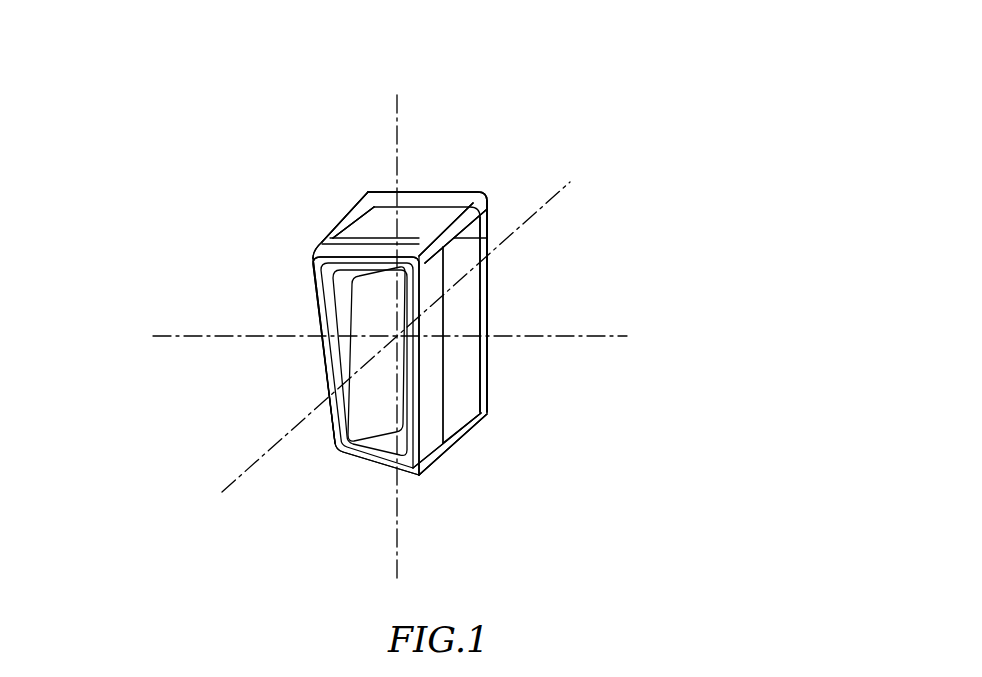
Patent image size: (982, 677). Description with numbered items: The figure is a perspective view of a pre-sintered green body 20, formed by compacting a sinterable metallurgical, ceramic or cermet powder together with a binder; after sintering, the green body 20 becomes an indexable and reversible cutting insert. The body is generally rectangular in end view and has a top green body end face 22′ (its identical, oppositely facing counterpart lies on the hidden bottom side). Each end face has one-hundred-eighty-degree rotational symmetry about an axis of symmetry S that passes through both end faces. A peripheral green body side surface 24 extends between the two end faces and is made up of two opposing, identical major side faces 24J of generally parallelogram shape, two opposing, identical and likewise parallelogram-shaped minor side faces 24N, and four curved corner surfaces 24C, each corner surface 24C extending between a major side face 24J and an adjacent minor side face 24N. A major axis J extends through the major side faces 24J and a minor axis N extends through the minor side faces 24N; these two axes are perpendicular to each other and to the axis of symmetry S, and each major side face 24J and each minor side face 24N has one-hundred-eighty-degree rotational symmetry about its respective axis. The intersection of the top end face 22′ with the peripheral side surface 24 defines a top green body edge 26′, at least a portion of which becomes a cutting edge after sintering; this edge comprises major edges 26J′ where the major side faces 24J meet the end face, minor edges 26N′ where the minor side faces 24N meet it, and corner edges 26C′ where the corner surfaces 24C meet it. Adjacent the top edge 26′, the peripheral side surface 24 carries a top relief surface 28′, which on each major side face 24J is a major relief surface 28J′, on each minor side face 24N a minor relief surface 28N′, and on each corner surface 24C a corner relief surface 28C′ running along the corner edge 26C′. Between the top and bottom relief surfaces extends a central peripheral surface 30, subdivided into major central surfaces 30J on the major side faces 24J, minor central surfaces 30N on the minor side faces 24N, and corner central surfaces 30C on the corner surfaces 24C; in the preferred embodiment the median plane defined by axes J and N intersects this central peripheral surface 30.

The green body 20 is at (757, 203).
The top green body end face 22′ is at (352, 350).
The peripheral green body side surface 24 is at (427, 207).
The minor side face 24N is at (437, 222).
The corner surface 24C is at (450, 477).
The major side face 24J is at (465, 424).
The top green body edge 26′ is at (338, 475).
The top corner edge 26C′ is at (410, 478).
The top minor edge 26N′ is at (363, 463).
The top major edge 26J′ is at (315, 303).
The top relief surface 28′ is at (330, 239).
The top minor relief surface 28N′ is at (313, 256).
The top corner relief surface 28C′ is at (421, 476).
The top major relief surface 28J′ is at (447, 440).
The central peripheral surface 30 is at (356, 210).
The minor central surface 30N is at (352, 216).
The corner central surface 30C is at (488, 240).
The major central surface 30J is at (458, 392).
The minor axis N is at (397, 572).
The major axis J is at (600, 336).
The axis of symmetry S is at (237, 480).